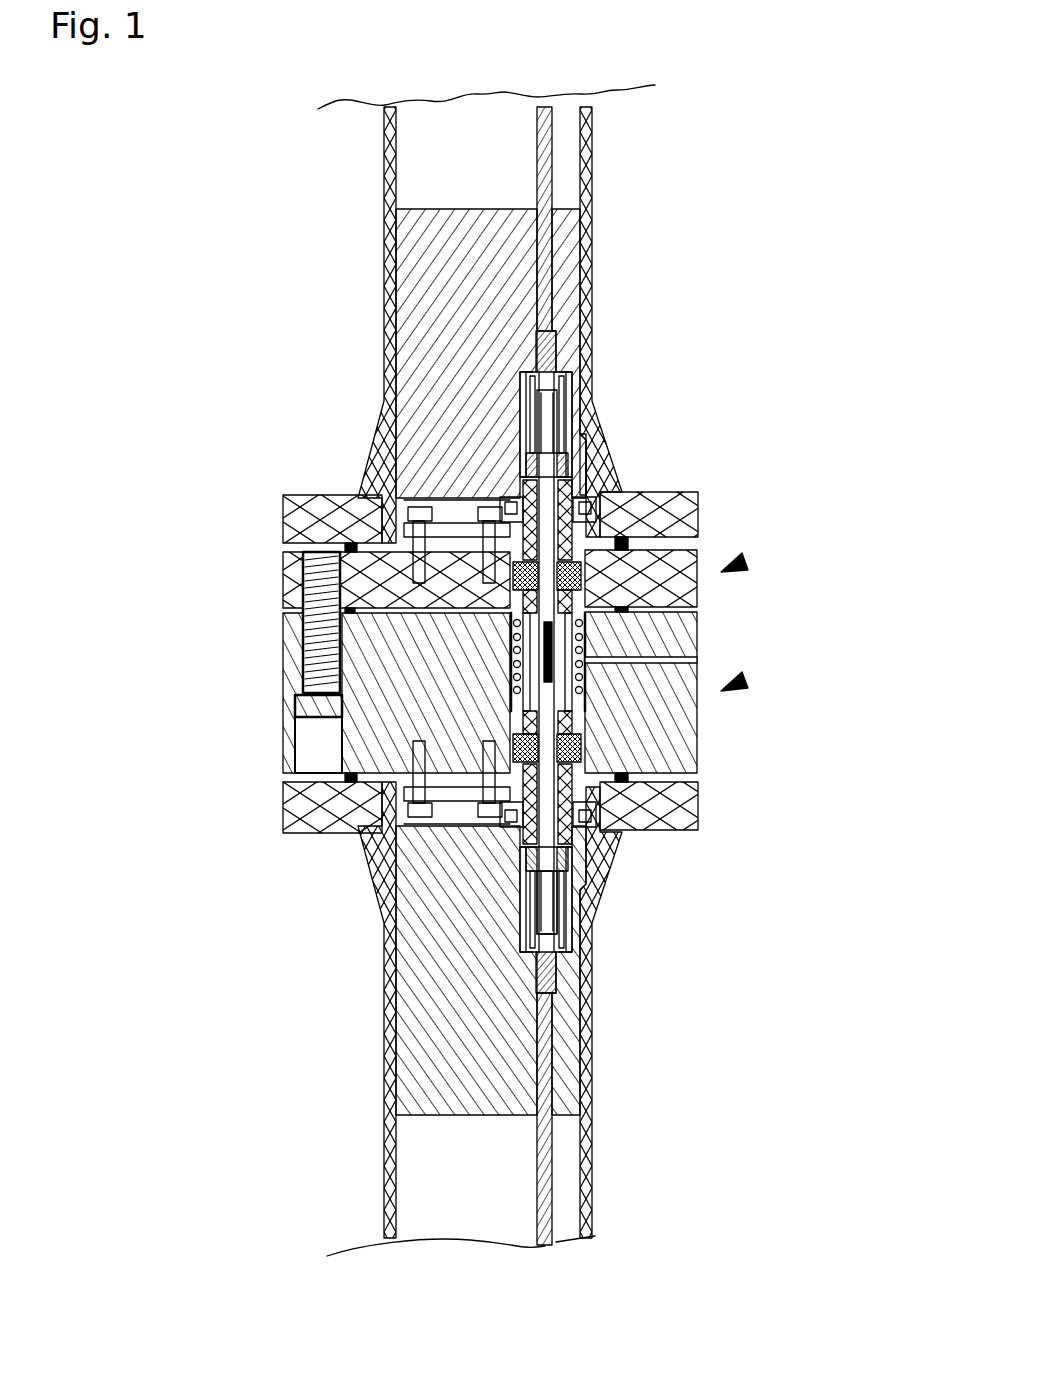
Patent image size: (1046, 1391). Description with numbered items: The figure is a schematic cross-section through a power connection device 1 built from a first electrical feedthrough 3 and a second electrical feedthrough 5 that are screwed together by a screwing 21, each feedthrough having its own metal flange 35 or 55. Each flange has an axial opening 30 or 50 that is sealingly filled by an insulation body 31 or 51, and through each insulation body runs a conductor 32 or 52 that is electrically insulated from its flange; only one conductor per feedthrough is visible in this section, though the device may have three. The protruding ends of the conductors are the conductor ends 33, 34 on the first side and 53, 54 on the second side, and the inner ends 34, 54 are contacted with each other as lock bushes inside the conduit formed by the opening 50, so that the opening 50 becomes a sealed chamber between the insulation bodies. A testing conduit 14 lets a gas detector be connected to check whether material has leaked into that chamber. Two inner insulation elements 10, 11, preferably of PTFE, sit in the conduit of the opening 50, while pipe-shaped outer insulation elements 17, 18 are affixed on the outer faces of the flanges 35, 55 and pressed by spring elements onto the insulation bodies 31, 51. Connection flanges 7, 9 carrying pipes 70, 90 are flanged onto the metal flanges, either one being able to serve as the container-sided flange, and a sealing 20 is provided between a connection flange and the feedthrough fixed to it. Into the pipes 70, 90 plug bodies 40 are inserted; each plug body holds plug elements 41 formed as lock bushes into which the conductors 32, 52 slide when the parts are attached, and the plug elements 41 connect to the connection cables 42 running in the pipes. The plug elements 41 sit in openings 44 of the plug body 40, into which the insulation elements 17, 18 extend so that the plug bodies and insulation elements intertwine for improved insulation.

The power connection device 1 is at (152, 183).
The first electrical feedthrough 3 is at (745, 562).
The second electrical feedthrough 5 is at (745, 677).
The connection flange 7 is at (283, 499).
The connection flange 9 is at (285, 819).
The inner insulation element 10 is at (518, 722).
The inner insulation element 11 is at (283, 603).
The testing conduit 14 is at (698, 658).
The outer insulation element 17 is at (620, 472).
The outer insulation element 18 is at (590, 862).
The sealing 20 is at (640, 613).
The screwing 21 is at (305, 705).
The opening 30 is at (700, 554).
The insulation body 31 is at (700, 598).
The conductor 32 is at (283, 573).
The conductor end 33 is at (598, 428).
The conductor end 34 is at (515, 622).
The metal flange 35 is at (283, 553).
The plug body 40 is at (440, 275).
The plug element 41 is at (585, 372).
The connection cable 42 is at (548, 170).
The opening 44 is at (540, 410).
The opening 50 is at (660, 712).
The insulation body 51 is at (640, 738).
The conductor 52 is at (698, 815).
The conductor end 53 is at (590, 918).
The conductor end 54 is at (518, 710).
The metal flange 55 is at (283, 768).
The pipe 70 is at (385, 330).
The pipe 90 is at (383, 964).